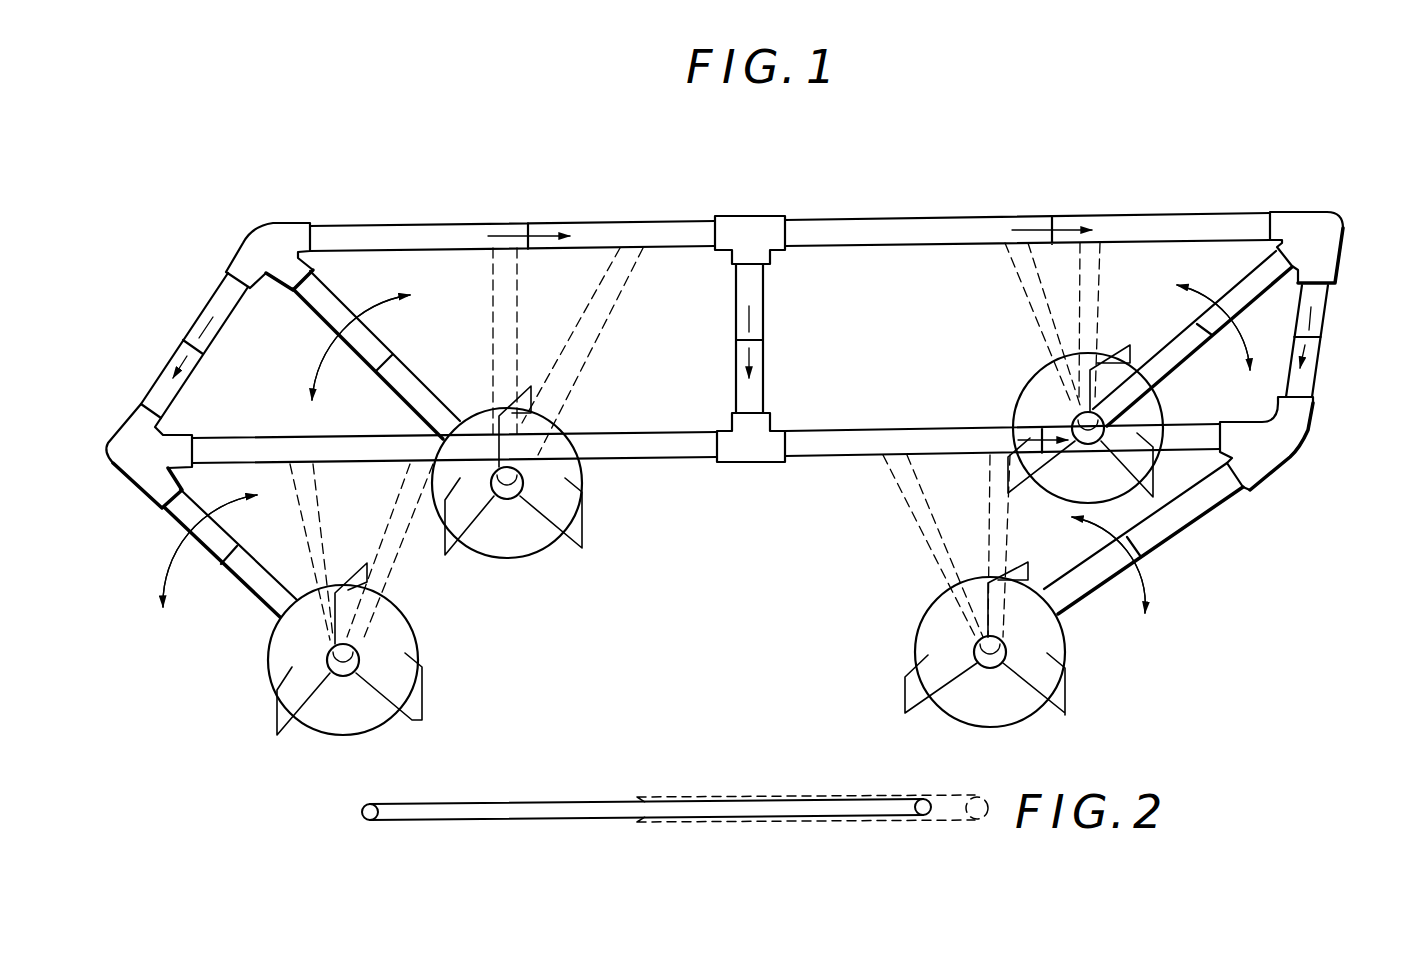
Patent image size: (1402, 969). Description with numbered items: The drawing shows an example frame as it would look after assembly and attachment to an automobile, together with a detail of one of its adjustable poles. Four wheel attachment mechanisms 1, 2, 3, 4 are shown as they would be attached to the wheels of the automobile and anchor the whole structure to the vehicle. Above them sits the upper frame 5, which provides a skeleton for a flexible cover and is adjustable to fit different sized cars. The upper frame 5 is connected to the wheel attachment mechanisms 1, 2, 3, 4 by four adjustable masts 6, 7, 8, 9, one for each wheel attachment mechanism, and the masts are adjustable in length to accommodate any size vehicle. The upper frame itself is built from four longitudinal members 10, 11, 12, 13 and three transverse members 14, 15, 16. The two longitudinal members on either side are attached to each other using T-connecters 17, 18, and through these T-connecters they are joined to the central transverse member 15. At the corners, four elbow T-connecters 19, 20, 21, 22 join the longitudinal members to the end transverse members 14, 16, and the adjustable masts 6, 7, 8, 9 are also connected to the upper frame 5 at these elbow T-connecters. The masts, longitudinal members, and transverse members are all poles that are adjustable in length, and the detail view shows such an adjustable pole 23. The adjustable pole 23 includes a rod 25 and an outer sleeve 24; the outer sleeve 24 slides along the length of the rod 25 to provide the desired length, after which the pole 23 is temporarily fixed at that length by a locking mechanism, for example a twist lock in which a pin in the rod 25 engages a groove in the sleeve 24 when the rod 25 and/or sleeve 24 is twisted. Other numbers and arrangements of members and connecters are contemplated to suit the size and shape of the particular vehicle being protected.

In FIG. 1, the wheel attachment mechanism 1 is at (268, 658).
In FIG. 1, the wheel attachment mechanism 2 is at (1060, 688).
In FIG. 1, the wheel attachment mechanism 3 is at (535, 548).
In FIG. 1, the wheel attachment mechanism 4 is at (1028, 393).
In FIG. 1, the upper frame 5 is at (984, 189).
In FIG. 1, the adjustable mast 6 is at (172, 525).
In FIG. 1, the adjustable mast 7 is at (1170, 545).
In FIG. 1, the adjustable mast 8 is at (331, 294).
In FIG. 1, the adjustable mast 9 is at (1247, 279).
In FIG. 1, the longitudinal member 10 is at (598, 223).
In FIG. 1, the longitudinal member 11 is at (617, 432).
In FIG. 1, the longitudinal member 12 is at (1112, 220).
In FIG. 1, the longitudinal member 13 is at (828, 431).
In FIG. 1, the transverse member 14 is at (190, 385).
In FIG. 1, the transverse member 15 is at (765, 307).
In FIG. 1, the transverse member 16 is at (1318, 368).
In FIG. 1, the T-connecter 17 is at (752, 217).
In FIG. 1, the T-connecter 18 is at (750, 460).
In FIG. 1, the elbow T-connecter 19 is at (270, 222).
In FIG. 1, the elbow T-connecter 20 is at (117, 424).
In FIG. 1, the elbow T-connecter 21 is at (1322, 235).
In FIG. 1, the elbow T-connecter 22 is at (1288, 464).
In FIG. 2, the adjustable pole 23 is at (735, 798).
In FIG. 2, the outer sleeve 24 is at (953, 800).
In FIG. 2, the rod 25 is at (462, 802).